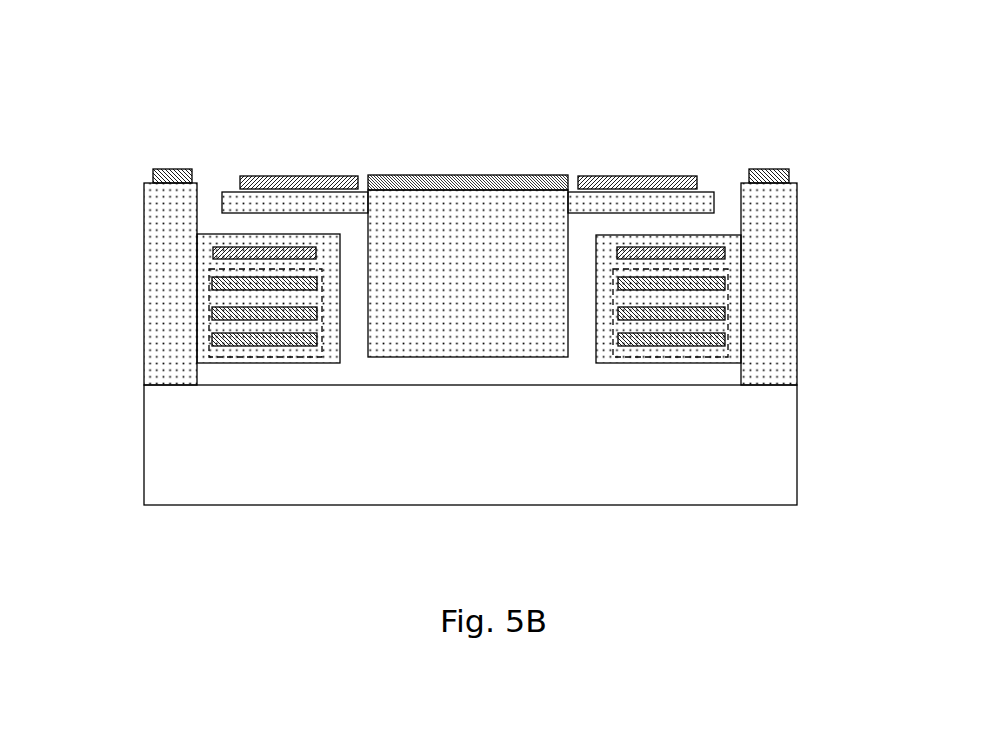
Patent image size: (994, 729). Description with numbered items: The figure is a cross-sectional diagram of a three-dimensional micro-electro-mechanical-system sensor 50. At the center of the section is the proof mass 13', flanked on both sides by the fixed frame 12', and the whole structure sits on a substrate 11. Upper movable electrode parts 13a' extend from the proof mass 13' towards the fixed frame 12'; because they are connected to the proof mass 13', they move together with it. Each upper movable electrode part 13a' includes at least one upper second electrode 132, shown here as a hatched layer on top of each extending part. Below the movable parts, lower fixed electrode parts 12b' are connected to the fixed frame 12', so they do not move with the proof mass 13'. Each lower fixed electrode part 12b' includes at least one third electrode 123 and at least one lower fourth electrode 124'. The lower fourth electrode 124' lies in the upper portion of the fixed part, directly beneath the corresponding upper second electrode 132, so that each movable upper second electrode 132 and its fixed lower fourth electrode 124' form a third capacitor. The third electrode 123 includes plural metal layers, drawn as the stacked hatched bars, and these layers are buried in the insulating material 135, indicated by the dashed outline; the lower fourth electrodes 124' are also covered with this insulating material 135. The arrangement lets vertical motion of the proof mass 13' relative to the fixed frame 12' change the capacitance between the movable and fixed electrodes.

The three-dimensional MEMS sensor 50 is at (790, 63).
The substrate 11 is at (207, 457).
The fixed frame 12' is at (518, 246).
The lower fixed electrode part 12b' is at (467, 474).
The proof mass 13' is at (480, 206).
The upper movable electrode part 13a' is at (465, 145).
The upper second electrode 132 is at (248, 175).
The lower fourth electrode 124' is at (467, 226).
The insulating material 135 is at (243, 358).
The third electrode 123 is at (213, 303).